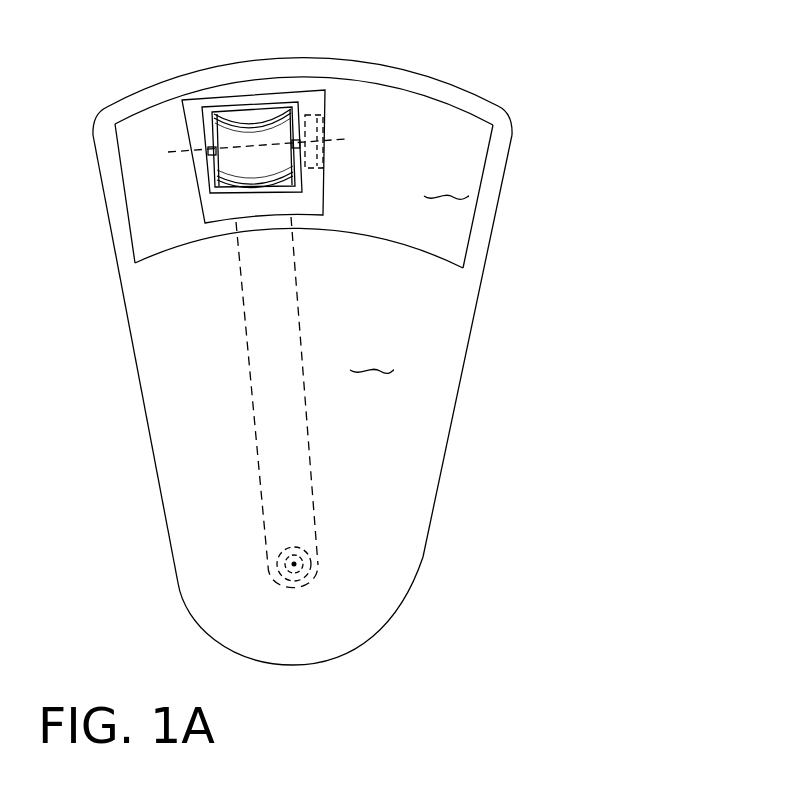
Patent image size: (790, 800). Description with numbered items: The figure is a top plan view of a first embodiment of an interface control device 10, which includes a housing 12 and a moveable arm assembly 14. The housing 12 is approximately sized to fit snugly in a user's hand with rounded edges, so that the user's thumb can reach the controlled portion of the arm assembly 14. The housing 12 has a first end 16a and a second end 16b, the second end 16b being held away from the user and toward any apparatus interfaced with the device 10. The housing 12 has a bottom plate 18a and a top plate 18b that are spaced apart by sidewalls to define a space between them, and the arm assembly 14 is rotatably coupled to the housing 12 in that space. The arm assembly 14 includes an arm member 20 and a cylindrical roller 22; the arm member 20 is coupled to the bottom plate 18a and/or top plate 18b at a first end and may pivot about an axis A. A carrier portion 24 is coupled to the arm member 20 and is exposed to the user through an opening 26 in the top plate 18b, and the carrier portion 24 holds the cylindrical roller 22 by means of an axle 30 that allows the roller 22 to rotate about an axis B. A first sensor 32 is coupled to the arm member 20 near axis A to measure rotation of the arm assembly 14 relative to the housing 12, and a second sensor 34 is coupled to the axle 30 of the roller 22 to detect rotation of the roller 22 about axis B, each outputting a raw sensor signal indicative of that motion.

The interface control device 10 is at (580, 57).
The housing 12 is at (457, 317).
The arm assembly 14 is at (236, 298).
The first end 16a is at (327, 655).
The second end 16b is at (288, 70).
The bottom plate 18a is at (446, 181).
The top plate 18b is at (371, 355).
The arm member 20 is at (287, 490).
The cylindrical roller 22 is at (252, 137).
The carrier portion 24 is at (322, 207).
The opening 26 is at (430, 130).
The axle 30 is at (297, 135).
The first sensor 32 is at (312, 553).
The second sensor 34 is at (328, 157).
The axis A is at (297, 566).
The axis B is at (369, 141).